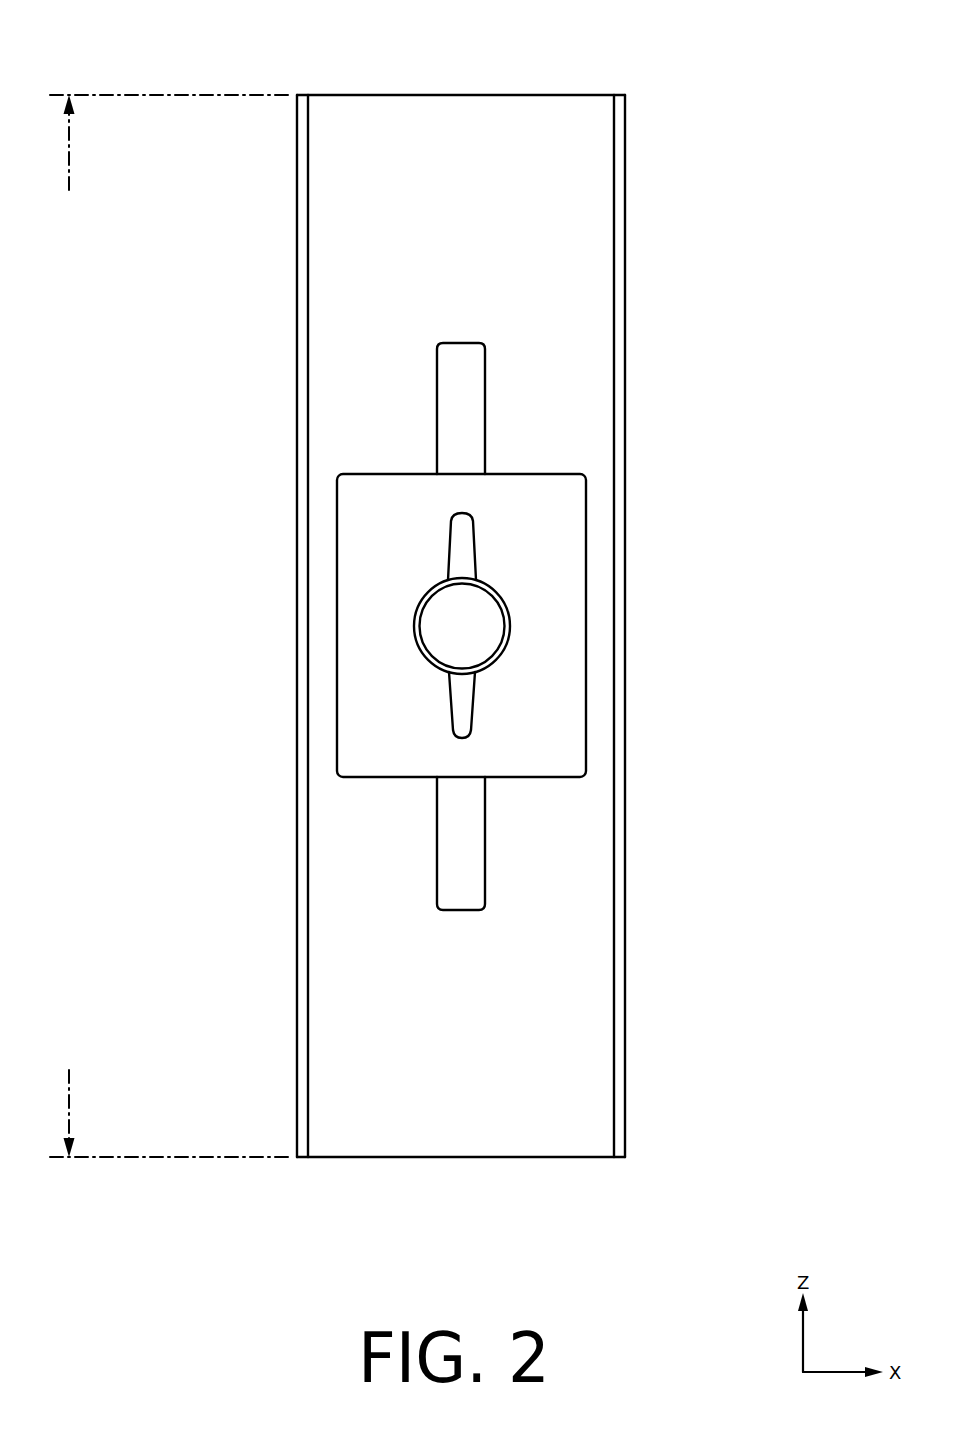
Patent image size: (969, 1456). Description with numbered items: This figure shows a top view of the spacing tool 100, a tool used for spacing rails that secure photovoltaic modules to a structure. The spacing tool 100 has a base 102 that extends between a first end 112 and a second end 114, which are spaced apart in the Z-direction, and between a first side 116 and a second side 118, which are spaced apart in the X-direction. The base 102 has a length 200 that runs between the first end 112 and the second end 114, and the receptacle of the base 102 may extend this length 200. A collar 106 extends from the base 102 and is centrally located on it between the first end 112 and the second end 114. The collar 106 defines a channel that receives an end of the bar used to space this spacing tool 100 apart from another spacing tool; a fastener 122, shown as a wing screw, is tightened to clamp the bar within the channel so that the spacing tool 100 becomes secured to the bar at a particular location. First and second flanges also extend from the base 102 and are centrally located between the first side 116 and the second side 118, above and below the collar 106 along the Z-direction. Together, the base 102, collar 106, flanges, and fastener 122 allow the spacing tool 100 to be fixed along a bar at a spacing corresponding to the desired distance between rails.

The spacing tool 100 is at (230, 62).
The base 102 is at (607, 215).
The collar 106 is at (567, 668).
The first end 112 is at (657, 1157).
The second end 114 is at (657, 95).
The first side 116 is at (247, 303).
The second side 118 is at (657, 287).
The fastener 122 is at (438, 630).
The length 200 is at (171, 626).